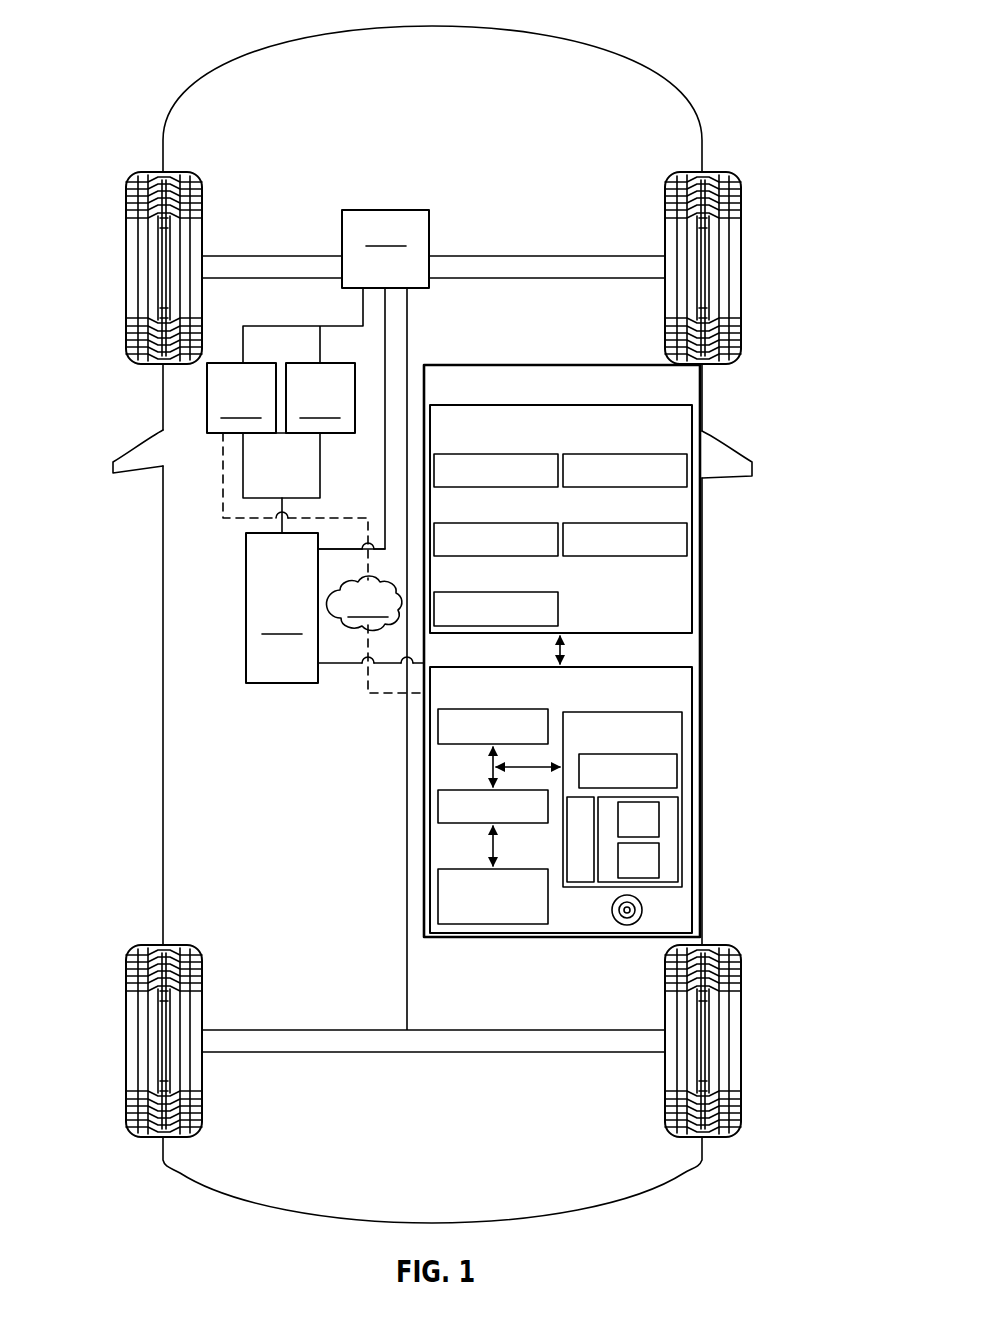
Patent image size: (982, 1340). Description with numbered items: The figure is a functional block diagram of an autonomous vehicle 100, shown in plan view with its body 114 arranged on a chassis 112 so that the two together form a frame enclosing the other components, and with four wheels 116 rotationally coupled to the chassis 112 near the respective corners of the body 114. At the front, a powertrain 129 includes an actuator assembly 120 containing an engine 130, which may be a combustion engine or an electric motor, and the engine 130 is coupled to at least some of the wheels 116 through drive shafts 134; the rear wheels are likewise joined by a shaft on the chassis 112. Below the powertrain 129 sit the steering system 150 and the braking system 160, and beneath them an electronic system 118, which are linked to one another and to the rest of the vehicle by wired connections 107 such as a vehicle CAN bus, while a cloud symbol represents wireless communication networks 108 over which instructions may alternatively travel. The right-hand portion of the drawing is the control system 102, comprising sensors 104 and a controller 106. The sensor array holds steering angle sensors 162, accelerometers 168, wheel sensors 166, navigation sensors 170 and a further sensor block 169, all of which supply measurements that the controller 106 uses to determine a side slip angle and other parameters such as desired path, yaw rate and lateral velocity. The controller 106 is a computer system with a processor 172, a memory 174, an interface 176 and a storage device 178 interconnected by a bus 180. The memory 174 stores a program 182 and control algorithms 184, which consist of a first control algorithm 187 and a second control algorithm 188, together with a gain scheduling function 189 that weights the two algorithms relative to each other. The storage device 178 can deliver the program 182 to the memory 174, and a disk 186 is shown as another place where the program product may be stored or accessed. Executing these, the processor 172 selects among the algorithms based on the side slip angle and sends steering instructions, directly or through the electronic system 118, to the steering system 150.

The vehicle 100 is at (140, 36).
The control system 102 is at (494, 364).
The sensors 104 is at (670, 636).
The controller 106 is at (490, 668).
The wired connections 107 is at (268, 497).
The wireless communication networks 108 is at (363, 603).
The chassis 112 is at (402, 1006).
The body 114 is at (163, 635).
The wheels 116 is at (126, 267).
The electronic system (ECS) 118 is at (282, 608).
The actuator assembly 120 is at (424, 292).
The powertrain 129 is at (362, 208).
The engine 130 is at (385, 249).
The drive shafts 134 is at (262, 255).
The steering system 150 is at (241, 398).
The braking system 160 is at (320, 398).
The steering angle sensors 162 is at (497, 453).
The wheel sensors 166 is at (497, 591).
The accelerometers 168 is at (625, 453).
The module 169 is at (497, 522).
The navigation sensors 170 is at (625, 522).
The processor 172 is at (436, 726).
The memory 174 is at (682, 723).
The interface 176 is at (436, 808).
The storage device 178 is at (436, 898).
The bus 180 is at (490, 762).
The program 182 is at (677, 772).
The control algorithms 184 is at (678, 846).
The disk 186 is at (642, 910).
The first control algorithm 187 is at (659, 820).
The second control algorithm 188 is at (659, 862).
The gain scheduling function 189 is at (580, 882).